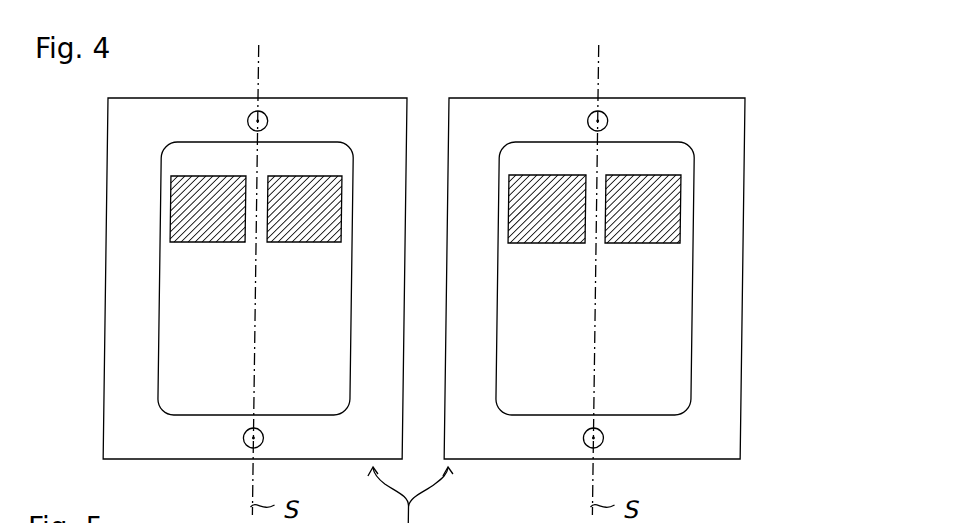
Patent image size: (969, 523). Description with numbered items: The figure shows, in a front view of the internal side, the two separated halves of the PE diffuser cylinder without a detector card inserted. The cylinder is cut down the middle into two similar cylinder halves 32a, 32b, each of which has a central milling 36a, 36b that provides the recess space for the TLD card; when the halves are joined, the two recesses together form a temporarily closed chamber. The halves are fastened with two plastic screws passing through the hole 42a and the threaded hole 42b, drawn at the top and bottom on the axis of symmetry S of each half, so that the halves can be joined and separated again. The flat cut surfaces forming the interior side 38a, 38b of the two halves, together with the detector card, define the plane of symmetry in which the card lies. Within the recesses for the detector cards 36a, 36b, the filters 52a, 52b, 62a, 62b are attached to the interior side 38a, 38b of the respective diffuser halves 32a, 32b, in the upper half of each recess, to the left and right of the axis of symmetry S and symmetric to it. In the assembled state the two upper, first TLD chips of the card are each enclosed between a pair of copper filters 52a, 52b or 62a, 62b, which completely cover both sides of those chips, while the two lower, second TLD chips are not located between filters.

The cylinder half 32a is at (108, 240).
The cylinder half 32b is at (745, 255).
The central milling 36a is at (162, 318).
The central milling 36b is at (693, 318).
The interior side 38a is at (128, 376).
The interior side 38b is at (715, 397).
The hole 42a is at (248, 119).
The threaded hole 42b is at (588, 118).
The copper filter 52a is at (172, 212).
The copper filter 52b is at (682, 198).
The copper filter 62a is at (313, 176).
The copper filter 62b is at (533, 175).